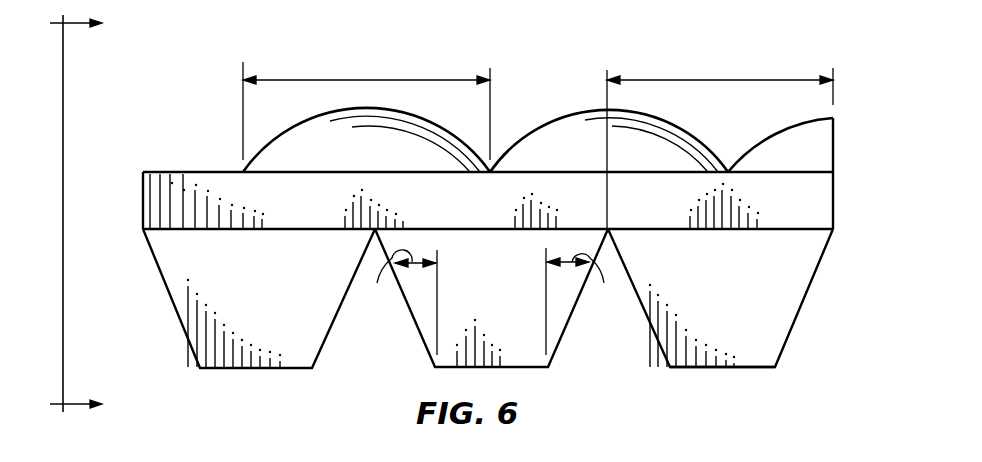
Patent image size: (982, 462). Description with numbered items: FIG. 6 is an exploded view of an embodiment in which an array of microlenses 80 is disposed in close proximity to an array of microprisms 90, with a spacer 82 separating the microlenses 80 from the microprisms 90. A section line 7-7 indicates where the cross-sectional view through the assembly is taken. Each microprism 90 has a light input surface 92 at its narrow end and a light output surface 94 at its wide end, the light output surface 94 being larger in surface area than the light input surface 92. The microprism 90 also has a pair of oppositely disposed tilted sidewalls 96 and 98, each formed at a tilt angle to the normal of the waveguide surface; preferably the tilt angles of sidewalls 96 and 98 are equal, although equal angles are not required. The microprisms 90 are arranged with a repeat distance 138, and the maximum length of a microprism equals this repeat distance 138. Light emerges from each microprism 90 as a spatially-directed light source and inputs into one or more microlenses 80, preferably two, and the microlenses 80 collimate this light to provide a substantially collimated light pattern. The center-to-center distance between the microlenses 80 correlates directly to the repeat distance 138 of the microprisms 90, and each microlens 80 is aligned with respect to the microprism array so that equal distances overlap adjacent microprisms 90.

The section line 7- 7 is at (86, 213).
The microlenses 80 is at (554, 118).
The spacer 82 is at (143, 202).
The microprisms 90 is at (810, 297).
The light input surface 92 is at (730, 368).
The light output surface 94 is at (836, 206).
The tilted sidewall 96 is at (160, 282).
The tilted sidewall 98 is at (346, 292).
The repeat distance 138 is at (378, 78).